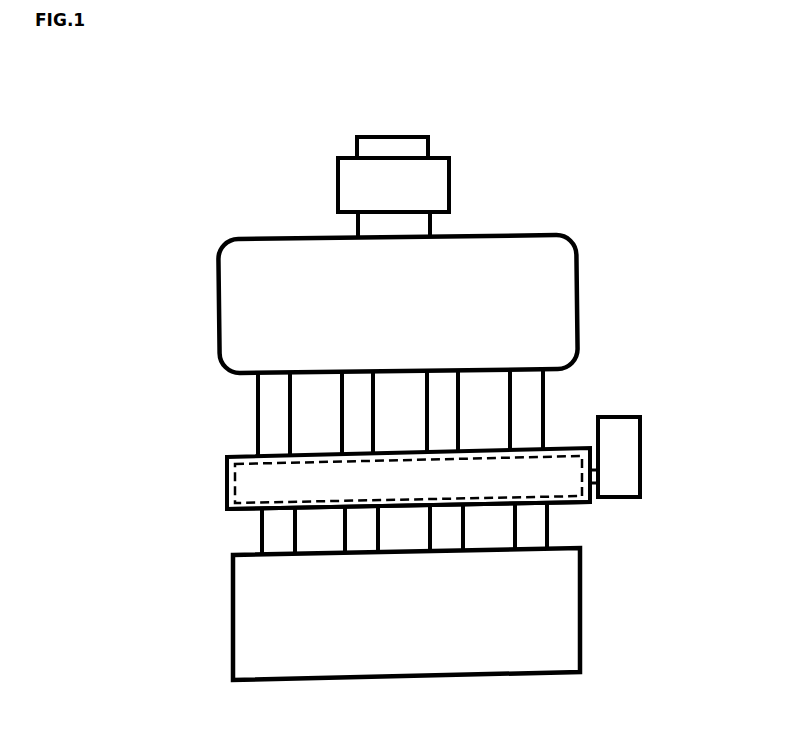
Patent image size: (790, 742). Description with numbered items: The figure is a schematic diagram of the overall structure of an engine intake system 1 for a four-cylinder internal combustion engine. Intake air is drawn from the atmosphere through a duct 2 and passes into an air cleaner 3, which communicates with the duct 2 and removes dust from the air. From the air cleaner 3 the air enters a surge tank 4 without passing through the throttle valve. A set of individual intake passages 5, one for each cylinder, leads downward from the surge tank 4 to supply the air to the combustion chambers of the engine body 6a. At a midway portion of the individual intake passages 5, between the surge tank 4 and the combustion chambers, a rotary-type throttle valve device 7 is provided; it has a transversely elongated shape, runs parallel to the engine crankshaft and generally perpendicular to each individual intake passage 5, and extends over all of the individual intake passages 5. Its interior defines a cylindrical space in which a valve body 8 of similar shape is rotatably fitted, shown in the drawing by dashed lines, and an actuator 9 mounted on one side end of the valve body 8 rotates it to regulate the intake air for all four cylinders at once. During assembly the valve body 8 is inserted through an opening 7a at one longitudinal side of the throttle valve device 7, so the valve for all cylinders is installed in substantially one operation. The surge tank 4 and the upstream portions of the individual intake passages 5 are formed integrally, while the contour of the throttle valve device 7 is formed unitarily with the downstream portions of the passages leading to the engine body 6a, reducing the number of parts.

The intake system 1 is at (192, 287).
The duct 2 is at (357, 138).
The air cleaner 3 is at (337, 175).
The surge tank 4 is at (512, 233).
The individual intake passages 5 is at (220, 540).
The engine body 6a is at (585, 618).
The throttle valve device 7 is at (225, 490).
The opening 7a is at (593, 503).
The valve body 8 is at (223, 478).
The actuator 9 is at (640, 438).